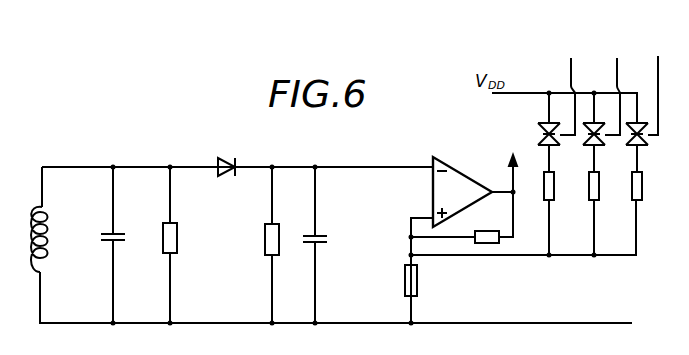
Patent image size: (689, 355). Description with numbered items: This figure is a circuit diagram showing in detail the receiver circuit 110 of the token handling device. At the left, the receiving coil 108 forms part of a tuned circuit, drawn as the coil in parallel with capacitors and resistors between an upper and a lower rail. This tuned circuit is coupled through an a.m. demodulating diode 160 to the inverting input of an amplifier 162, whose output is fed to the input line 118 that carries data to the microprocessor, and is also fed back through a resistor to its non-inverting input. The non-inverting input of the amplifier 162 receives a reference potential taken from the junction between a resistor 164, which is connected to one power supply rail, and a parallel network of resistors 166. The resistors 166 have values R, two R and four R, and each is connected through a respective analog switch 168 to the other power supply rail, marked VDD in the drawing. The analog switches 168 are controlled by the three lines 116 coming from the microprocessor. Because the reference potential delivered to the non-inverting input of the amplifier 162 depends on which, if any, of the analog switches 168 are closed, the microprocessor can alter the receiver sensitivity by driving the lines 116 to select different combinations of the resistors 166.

The receiving antenna 108 is at (48, 257).
The receiver circuit 110 is at (341, 150).
The a.m. demodulating diode 160 is at (225, 160).
The amplifier 162 is at (432, 194).
The input line 118 is at (510, 170).
The resistor 164 is at (419, 285).
The output lines 116 is at (658, 56).
The analog switches 168 is at (538, 134).
The resistors 166 is at (632, 203).